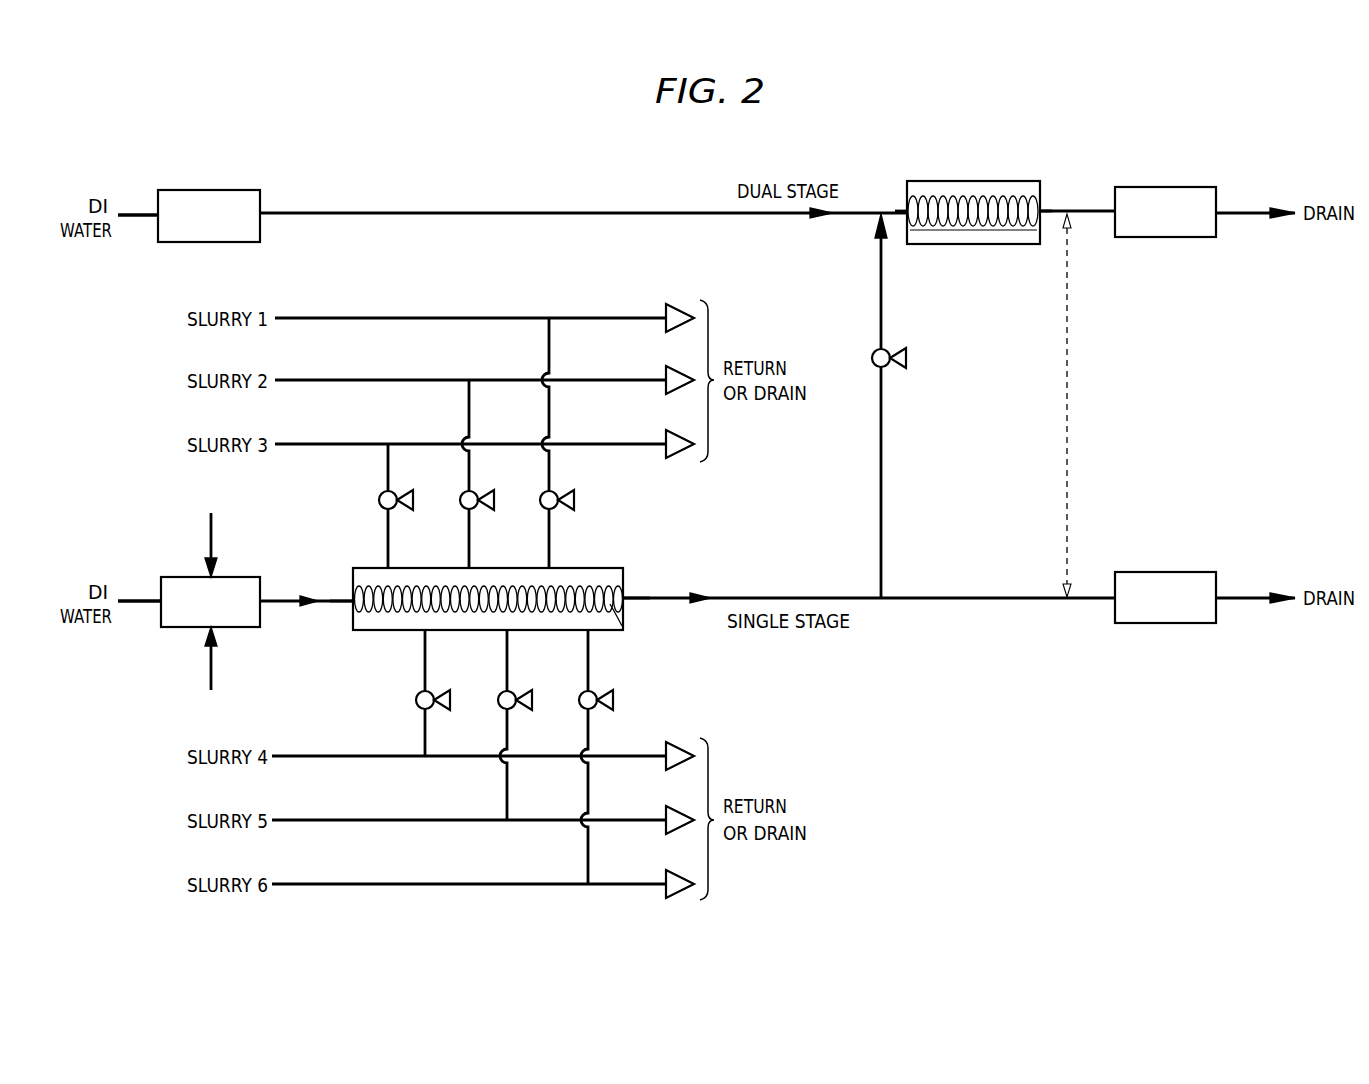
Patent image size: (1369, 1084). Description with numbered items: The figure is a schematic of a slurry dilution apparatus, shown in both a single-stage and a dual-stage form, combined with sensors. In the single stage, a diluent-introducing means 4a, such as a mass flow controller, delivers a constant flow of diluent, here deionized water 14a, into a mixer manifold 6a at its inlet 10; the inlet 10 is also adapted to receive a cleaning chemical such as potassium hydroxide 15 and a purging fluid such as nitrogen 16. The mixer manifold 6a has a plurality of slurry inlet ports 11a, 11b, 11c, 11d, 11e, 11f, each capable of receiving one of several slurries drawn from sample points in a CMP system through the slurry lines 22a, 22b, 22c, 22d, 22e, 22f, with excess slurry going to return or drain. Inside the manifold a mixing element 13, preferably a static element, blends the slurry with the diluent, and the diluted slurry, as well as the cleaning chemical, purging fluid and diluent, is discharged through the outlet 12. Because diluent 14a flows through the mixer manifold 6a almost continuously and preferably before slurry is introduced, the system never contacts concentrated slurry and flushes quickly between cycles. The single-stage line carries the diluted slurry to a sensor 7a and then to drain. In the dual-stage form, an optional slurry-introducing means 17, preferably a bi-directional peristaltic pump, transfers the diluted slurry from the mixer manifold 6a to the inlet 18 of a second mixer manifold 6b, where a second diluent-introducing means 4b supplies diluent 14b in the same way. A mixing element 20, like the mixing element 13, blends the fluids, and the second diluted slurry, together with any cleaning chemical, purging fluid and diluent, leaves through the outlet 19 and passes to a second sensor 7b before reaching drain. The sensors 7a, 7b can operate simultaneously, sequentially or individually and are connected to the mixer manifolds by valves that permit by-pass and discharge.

The deionized water 14a is at (95, 572).
The diluent 14b is at (97, 188).
The diluent-introducing means 4a is at (246, 575).
The second diluent-introducing means 4b is at (205, 190).
The mixer manifold 6a is at (365, 568).
The second mixer manifold 6b is at (965, 181).
The sensor 7a is at (1161, 572).
The sensor 7b is at (1161, 187).
The inlet 10 is at (352, 612).
The slurry inlet port 11a is at (391, 566).
The slurry inlet port 11b is at (471, 566).
The slurry inlet port 11c is at (553, 566).
The slurry inlet port 11d is at (424, 639).
The slurry inlet port 11e is at (506, 639).
The slurry inlet port 11f is at (587, 639).
The outlet 12 is at (626, 594).
The mixing element 13 is at (621, 625).
The potassium hydroxide 15 is at (186, 712).
The nitrogen 16 is at (194, 500).
The slurry-introducing means 17 is at (906, 360).
The inlet 18 is at (906, 209).
The outlet 19 is at (1040, 207).
The mixing element 20 is at (987, 231).
The slurry line 22a is at (357, 444).
The slurry line 22b is at (328, 380).
The slurry line 22c is at (300, 318).
The slurry line 22d is at (306, 755).
The slurry line 22e is at (338, 819).
The slurry line 22f is at (377, 884).